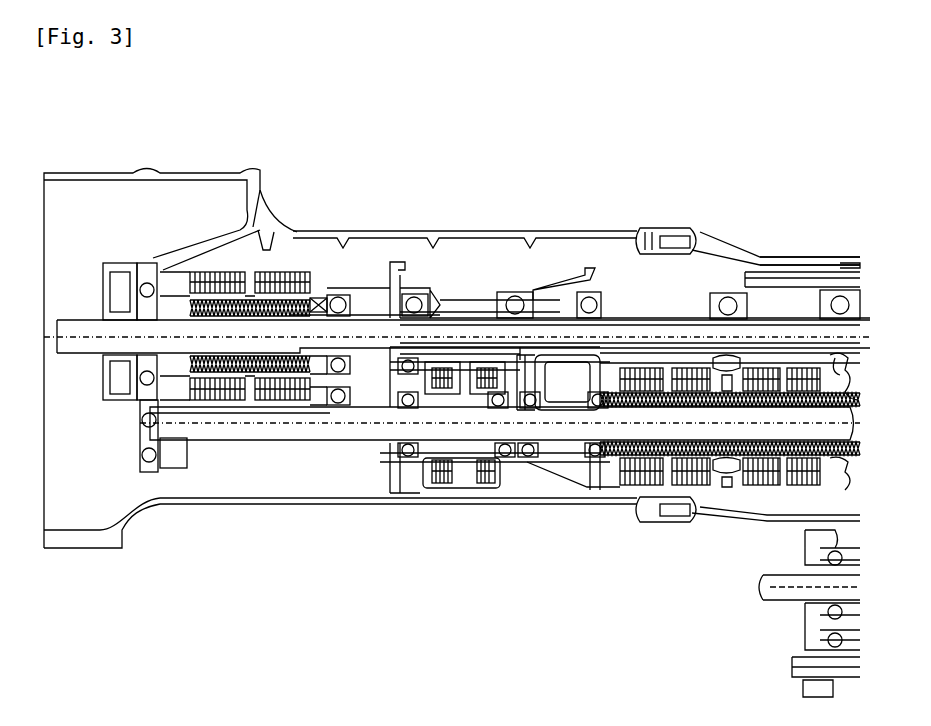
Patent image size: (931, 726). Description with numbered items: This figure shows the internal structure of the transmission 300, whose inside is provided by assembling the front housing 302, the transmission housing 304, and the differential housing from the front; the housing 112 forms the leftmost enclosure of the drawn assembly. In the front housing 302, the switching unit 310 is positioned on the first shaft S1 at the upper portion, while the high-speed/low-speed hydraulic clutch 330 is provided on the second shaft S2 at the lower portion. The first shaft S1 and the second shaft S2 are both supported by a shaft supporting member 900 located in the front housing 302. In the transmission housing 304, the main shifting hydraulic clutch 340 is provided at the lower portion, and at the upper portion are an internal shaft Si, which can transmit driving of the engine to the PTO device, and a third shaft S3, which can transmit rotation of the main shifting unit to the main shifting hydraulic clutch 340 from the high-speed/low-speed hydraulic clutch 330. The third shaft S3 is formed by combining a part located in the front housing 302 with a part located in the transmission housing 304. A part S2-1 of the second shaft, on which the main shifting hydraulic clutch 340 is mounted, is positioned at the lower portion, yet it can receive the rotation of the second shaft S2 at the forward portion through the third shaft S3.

The transmission 300 is at (569, 99).
The housing 112 is at (100, 280).
The first shaft S1 is at (160, 335).
The switching unit 310 is at (300, 222).
The shaft supporting member 900 is at (405, 262).
The third shaft S3 is at (487, 323).
The front housing 302 is at (590, 232).
The internal shaft Si is at (693, 340).
The transmission housing 304 is at (780, 257).
The second shaft S2 is at (417, 457).
The high-speed/low-speed hydraulic clutch 330 is at (488, 487).
The part of the second shaft S2-1 is at (682, 433).
The main shifting hydraulic clutch 340 is at (767, 497).